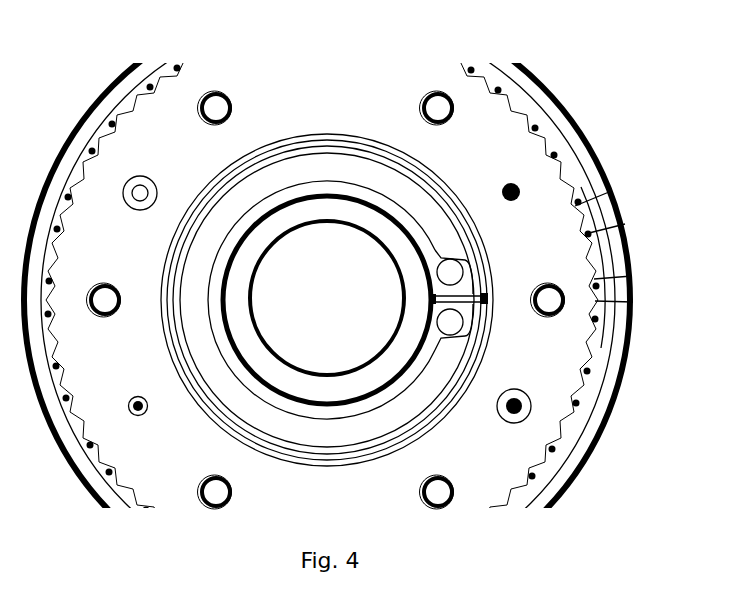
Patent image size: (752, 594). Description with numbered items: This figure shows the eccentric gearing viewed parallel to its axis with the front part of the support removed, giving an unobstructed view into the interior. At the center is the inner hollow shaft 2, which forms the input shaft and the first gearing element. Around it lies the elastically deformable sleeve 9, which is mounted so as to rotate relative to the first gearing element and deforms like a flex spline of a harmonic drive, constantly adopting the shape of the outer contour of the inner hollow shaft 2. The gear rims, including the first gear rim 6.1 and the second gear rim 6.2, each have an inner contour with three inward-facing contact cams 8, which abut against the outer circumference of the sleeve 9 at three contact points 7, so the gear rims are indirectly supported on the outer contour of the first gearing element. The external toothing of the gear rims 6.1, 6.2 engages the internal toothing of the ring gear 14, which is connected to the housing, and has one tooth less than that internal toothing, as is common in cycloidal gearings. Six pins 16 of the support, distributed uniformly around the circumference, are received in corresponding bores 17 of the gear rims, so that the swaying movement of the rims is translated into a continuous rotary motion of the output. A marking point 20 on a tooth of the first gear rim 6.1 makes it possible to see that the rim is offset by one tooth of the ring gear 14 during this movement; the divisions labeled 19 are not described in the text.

The inner hollow shaft 2 is at (287, 226).
The first gear rim 6.1 is at (554, 407).
The second gear rim 6.2 is at (253, 155).
The contact point 7 is at (406, 157).
The contact cam 8 is at (419, 157).
The elastically deformable sleeve 9 is at (473, 230).
The ring gear 14 is at (623, 380).
The pin 16 is at (231, 491).
The bore 17 is at (198, 487).
The tooth segment divider 19 is at (608, 190).
The marking point 20 is at (640, 287).